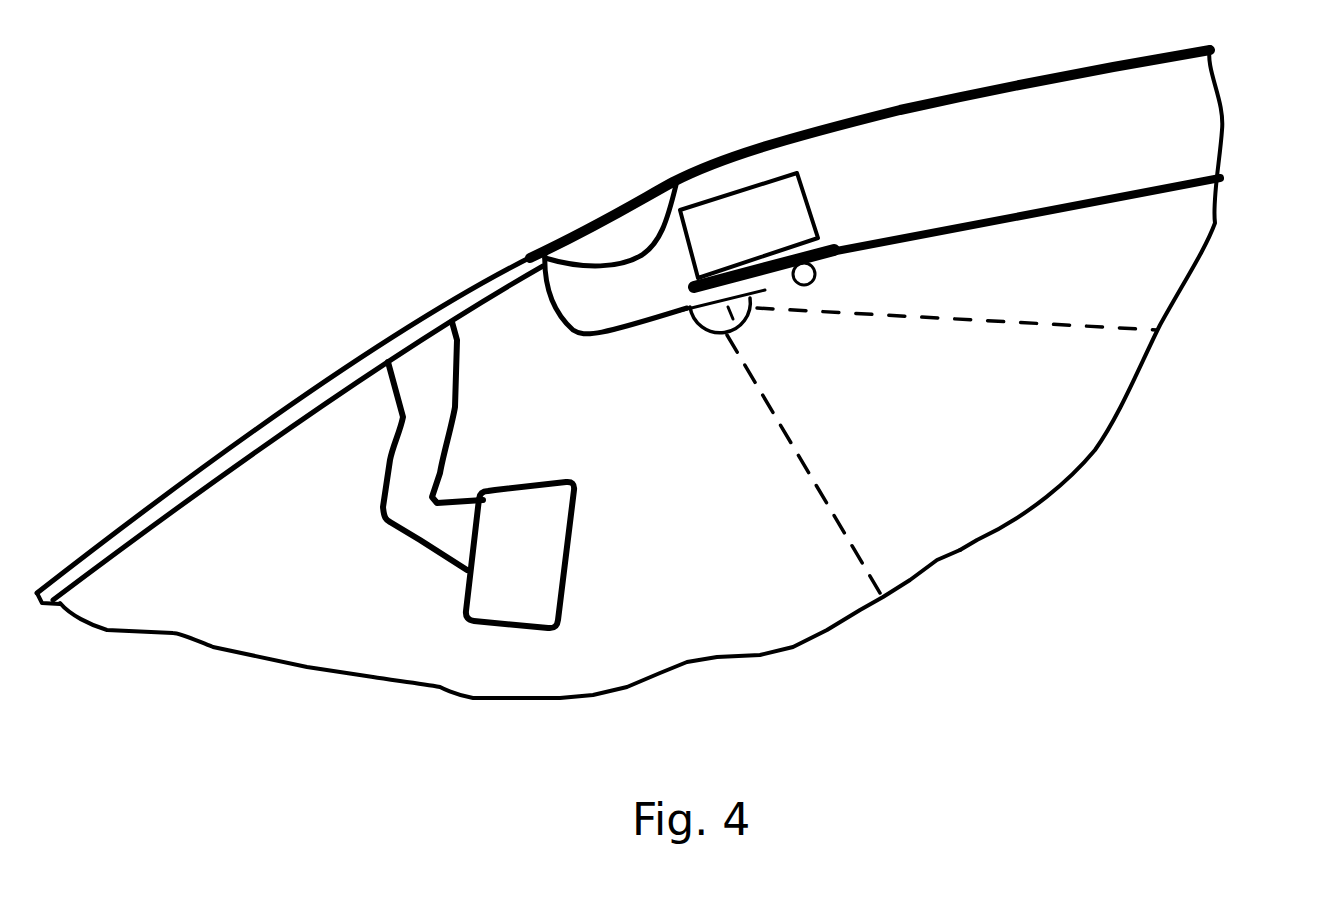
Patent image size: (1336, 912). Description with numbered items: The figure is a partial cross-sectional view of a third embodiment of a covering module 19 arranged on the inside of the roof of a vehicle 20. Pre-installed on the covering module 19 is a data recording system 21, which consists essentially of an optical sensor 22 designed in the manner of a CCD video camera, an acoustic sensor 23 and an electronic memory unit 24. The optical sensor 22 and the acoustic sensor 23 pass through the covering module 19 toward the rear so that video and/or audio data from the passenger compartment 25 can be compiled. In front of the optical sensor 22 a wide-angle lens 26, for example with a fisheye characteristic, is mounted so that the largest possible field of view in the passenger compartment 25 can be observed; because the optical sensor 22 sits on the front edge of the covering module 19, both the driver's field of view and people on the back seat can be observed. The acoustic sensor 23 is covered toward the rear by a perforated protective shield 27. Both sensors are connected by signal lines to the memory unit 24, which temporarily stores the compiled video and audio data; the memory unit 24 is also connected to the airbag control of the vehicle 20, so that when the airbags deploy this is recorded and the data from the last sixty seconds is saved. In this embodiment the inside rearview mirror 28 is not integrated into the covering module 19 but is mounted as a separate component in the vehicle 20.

The covering module 19 is at (1130, 195).
The vehicle 20 is at (305, 216).
The data recording system 21 is at (907, 168).
The optical sensor 22 is at (690, 338).
The acoustic sensor 23 is at (838, 288).
The electronic memory unit 24 is at (778, 218).
The passenger compartment 25 is at (748, 604).
The wide-angle lens 26 is at (714, 333).
The perforated protective shield 27 is at (816, 280).
The inside rearview mirror 28 is at (533, 503).